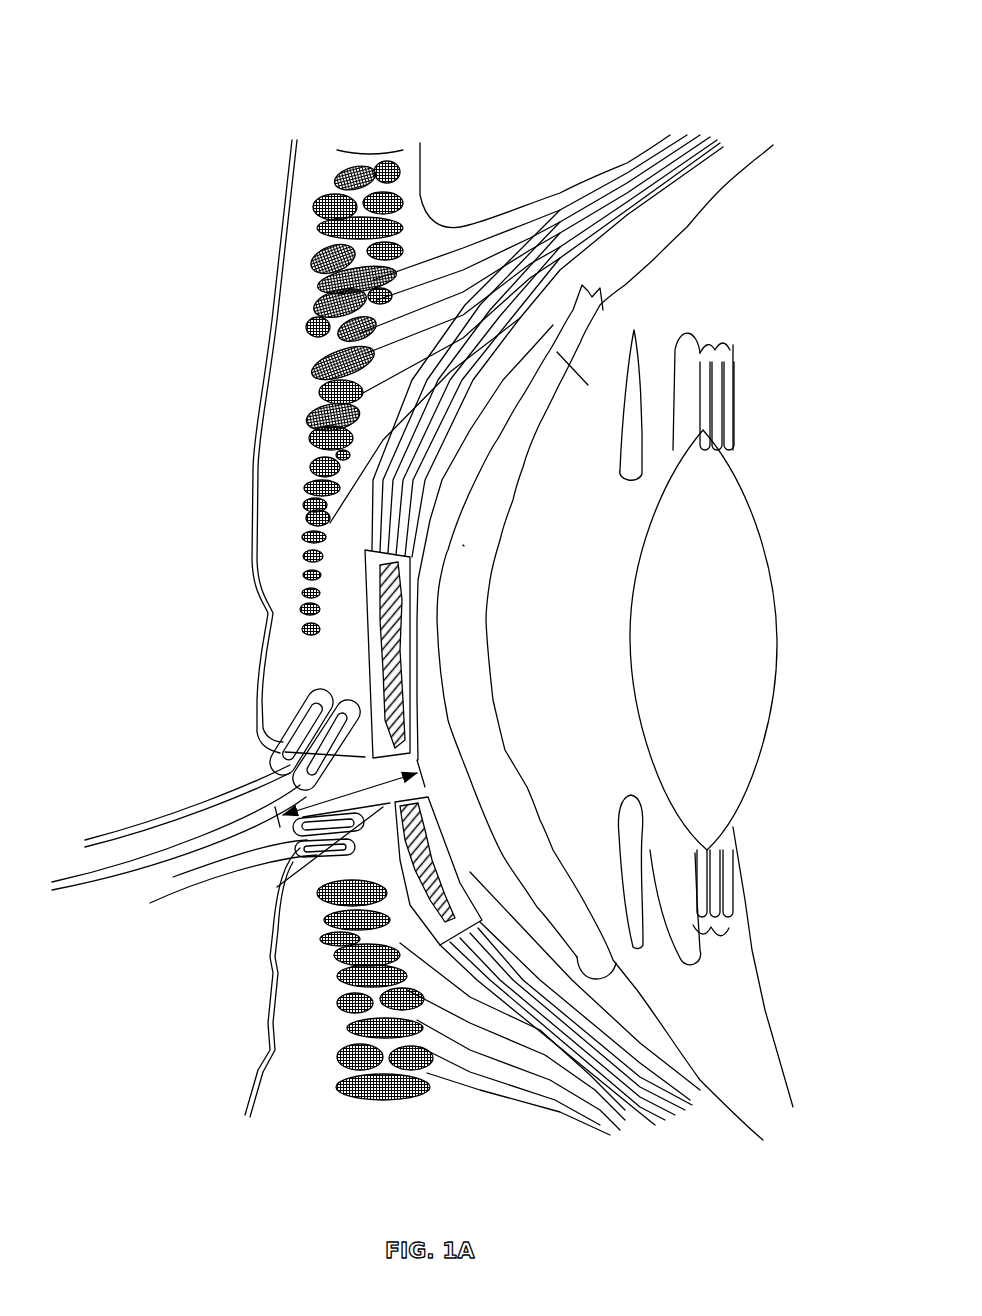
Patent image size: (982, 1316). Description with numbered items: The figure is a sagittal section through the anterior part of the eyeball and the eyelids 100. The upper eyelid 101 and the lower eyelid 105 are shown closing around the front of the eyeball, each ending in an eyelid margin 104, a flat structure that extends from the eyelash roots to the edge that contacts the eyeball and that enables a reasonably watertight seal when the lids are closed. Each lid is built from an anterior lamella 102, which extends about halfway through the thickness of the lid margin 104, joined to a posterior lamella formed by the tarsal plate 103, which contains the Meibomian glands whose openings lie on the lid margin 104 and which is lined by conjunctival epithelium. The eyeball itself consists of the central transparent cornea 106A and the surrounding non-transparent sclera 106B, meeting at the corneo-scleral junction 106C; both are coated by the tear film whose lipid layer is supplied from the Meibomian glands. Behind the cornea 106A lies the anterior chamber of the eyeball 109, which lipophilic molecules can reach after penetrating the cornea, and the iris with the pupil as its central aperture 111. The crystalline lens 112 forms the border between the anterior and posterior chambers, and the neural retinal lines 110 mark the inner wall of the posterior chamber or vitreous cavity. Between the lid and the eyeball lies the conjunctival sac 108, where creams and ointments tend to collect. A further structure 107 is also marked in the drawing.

The anterior part of eyeball and eyelids 100 is at (421, 76).
The upper eyelid 101 is at (262, 385).
The anterior lamella 102 is at (292, 625).
The tarsal plate 103 is at (370, 660).
The eyelid margin 104 is at (327, 800).
The lower eyelid 105 is at (260, 1025).
The cornea 106A is at (463, 545).
The sclera 106B is at (600, 330).
The corneo-scleral junction 106C is at (590, 370).
The ciliary processes 107 is at (423, 805).
The conjunctival sac 108 is at (580, 957).
The anterior chamber of the eyeball 109 is at (577, 617).
The neural retinal lines 110 is at (800, 706).
The iris with pupil as central aperture 111 is at (638, 448).
The crystalline lens 112 is at (713, 530).